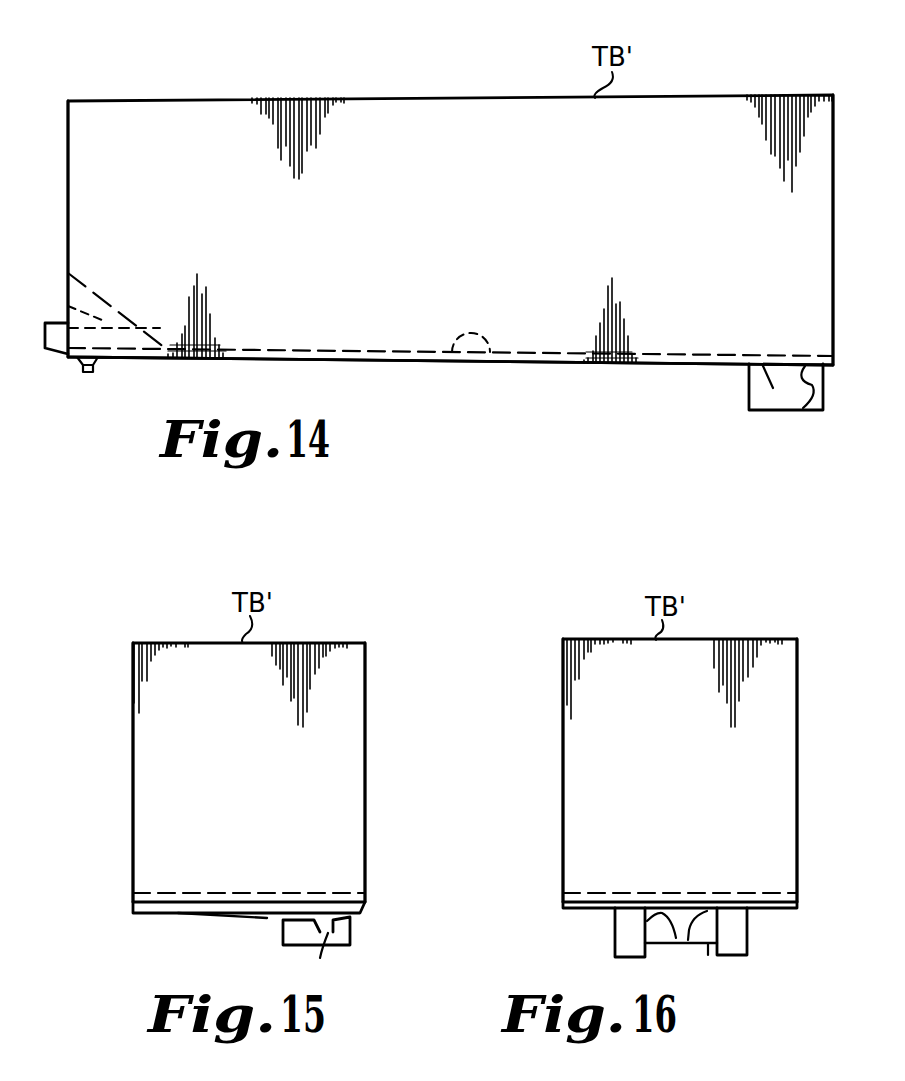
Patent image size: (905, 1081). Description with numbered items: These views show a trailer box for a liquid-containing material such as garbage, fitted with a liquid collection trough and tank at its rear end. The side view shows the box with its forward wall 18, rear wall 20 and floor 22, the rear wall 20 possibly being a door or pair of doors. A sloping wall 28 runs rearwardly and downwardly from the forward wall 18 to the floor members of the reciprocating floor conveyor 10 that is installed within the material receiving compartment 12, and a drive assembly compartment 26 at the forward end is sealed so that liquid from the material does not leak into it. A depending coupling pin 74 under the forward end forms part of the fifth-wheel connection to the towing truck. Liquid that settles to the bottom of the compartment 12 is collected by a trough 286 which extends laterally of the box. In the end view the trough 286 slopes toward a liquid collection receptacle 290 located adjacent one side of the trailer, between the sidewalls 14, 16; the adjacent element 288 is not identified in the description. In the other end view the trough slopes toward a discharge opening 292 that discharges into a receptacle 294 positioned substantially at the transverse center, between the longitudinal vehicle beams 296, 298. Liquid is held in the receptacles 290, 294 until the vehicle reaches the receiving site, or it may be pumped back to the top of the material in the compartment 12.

In FIG. 14, the reciprocating floor conveyor 10 is at (489, 356).
In FIG. 15, the reciprocating floor conveyor 10 is at (231, 893).
In FIG. 16, the reciprocating floor conveyor 10 is at (680, 893).
In FIG. 14, the material receiving compartment 12 is at (448, 112).
In FIG. 15, the material receiving compartment 12 is at (343, 752).
In FIG. 16, the material receiving compartment 12 is at (583, 782).
In FIG. 15, the sidewall 14 is at (133, 668).
In FIG. 16, the sidewall 14 is at (563, 676).
In FIG. 15, the sidewall 16 is at (368, 672).
In FIG. 16, the sidewall 16 is at (800, 670).
In FIG. 14, the forward wall 18 is at (70, 261).
In FIG. 14, the rear wall 20 is at (836, 240).
In FIG. 14, the floor 22 is at (262, 360).
In FIG. 14, the drive assembly compartment 26 is at (68, 305).
In FIG. 14, the sloping wall 28 is at (90, 284).
In FIG. 14, the coupling pin 74 is at (78, 366).
In FIG. 14, the trough 286 is at (803, 408).
In FIG. 15, the trough 286 is at (267, 920).
In FIG. 16, the trough 286 is at (648, 924).
In FIG. 14, the foot block 288 is at (749, 390).
In FIG. 15, the foot block 288 is at (352, 926).
In FIG. 15, the liquid collection receptacle 290 is at (320, 958).
In FIG. 16, the discharge opening 292 is at (677, 944).
In FIG. 16, the receptacle 294 is at (708, 950).
In FIG. 16, the longitudinal vehicle beam 296 is at (615, 942).
In FIG. 16, the longitudinal vehicle beam 298 is at (747, 930).